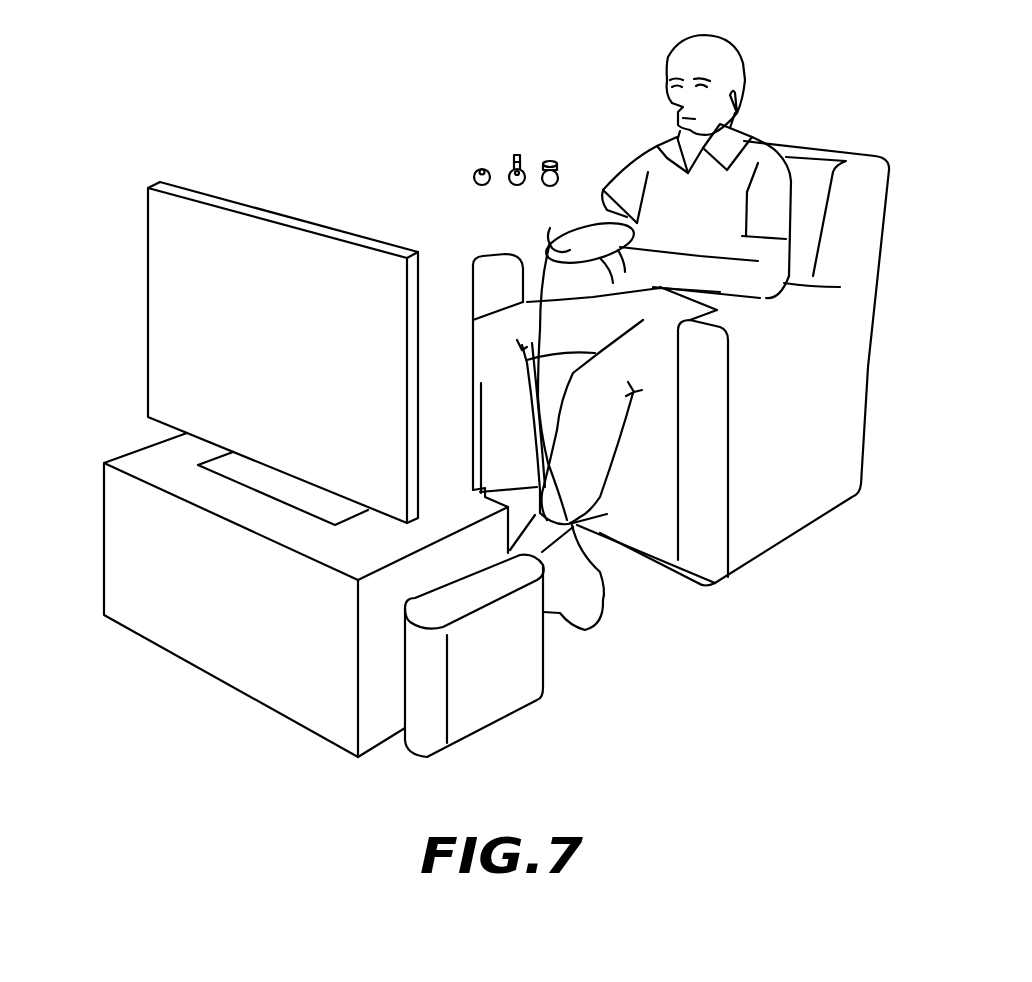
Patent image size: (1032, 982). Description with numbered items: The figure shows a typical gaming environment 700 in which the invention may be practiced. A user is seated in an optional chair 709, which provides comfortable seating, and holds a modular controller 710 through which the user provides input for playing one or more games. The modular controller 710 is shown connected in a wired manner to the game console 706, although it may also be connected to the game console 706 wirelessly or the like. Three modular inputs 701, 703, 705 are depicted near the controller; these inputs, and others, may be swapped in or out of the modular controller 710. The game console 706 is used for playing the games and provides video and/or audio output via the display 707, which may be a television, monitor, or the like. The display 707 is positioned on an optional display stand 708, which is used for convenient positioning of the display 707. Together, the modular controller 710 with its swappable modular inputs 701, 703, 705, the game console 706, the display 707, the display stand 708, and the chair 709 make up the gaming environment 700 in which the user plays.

The gaming environment 700 is at (263, 62).
The modular input 701 is at (562, 173).
The modular input 703 is at (470, 177).
The modular input 705 is at (508, 173).
The game console 706 is at (530, 658).
The display 707 is at (158, 290).
The display stand 708 is at (133, 537).
The chair 709 is at (858, 376).
The modular controller 710 is at (547, 230).